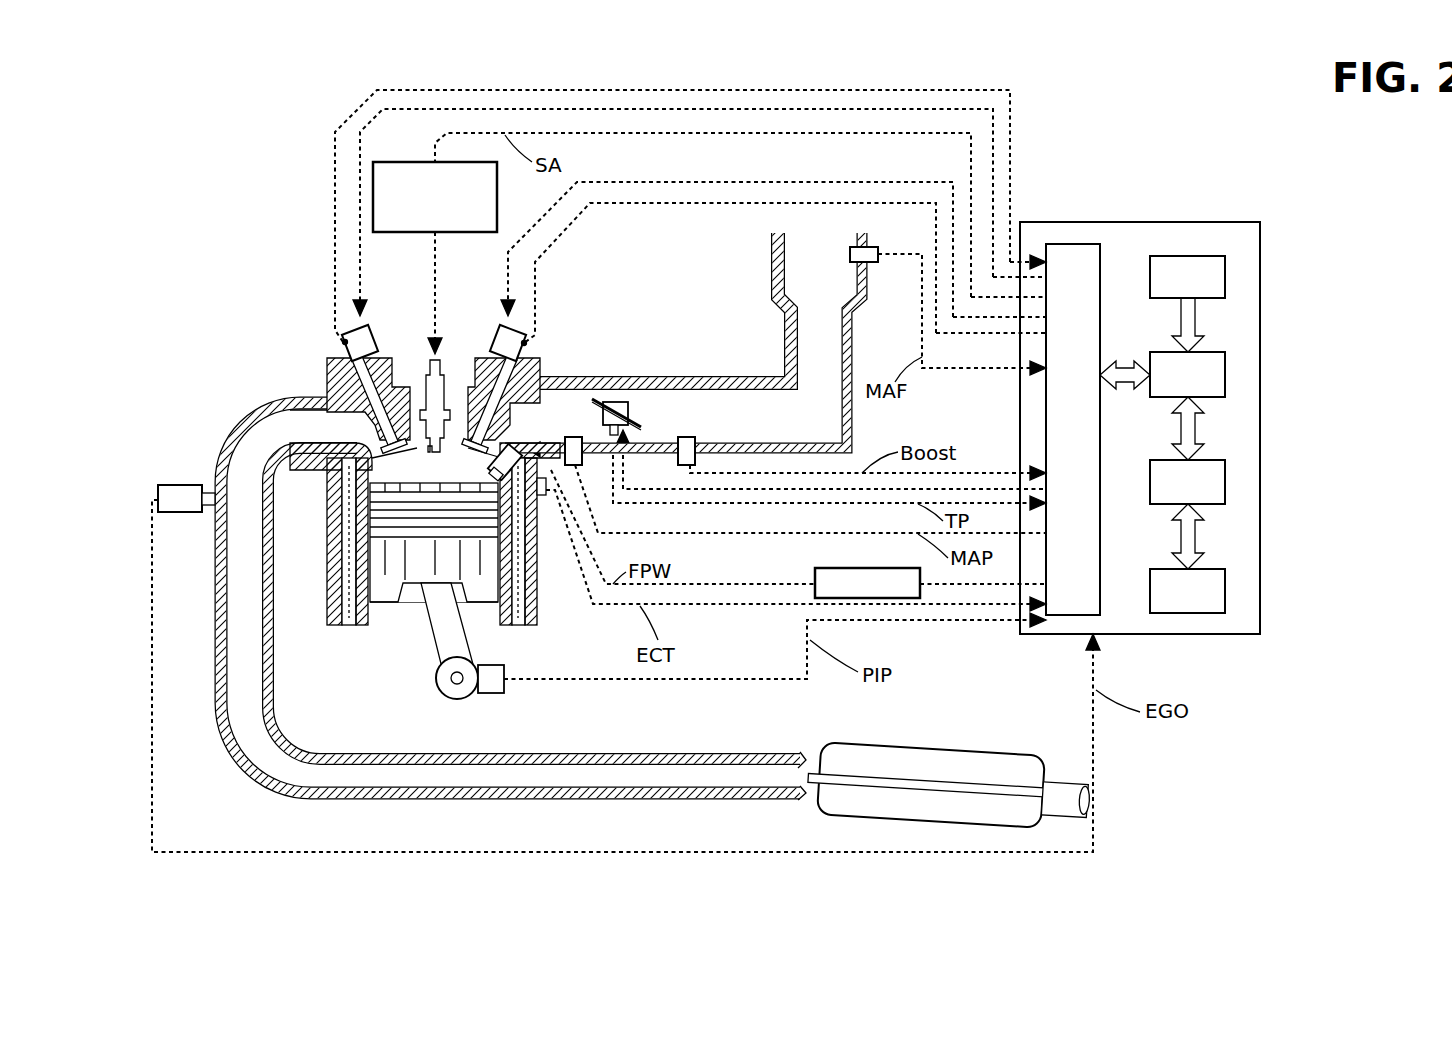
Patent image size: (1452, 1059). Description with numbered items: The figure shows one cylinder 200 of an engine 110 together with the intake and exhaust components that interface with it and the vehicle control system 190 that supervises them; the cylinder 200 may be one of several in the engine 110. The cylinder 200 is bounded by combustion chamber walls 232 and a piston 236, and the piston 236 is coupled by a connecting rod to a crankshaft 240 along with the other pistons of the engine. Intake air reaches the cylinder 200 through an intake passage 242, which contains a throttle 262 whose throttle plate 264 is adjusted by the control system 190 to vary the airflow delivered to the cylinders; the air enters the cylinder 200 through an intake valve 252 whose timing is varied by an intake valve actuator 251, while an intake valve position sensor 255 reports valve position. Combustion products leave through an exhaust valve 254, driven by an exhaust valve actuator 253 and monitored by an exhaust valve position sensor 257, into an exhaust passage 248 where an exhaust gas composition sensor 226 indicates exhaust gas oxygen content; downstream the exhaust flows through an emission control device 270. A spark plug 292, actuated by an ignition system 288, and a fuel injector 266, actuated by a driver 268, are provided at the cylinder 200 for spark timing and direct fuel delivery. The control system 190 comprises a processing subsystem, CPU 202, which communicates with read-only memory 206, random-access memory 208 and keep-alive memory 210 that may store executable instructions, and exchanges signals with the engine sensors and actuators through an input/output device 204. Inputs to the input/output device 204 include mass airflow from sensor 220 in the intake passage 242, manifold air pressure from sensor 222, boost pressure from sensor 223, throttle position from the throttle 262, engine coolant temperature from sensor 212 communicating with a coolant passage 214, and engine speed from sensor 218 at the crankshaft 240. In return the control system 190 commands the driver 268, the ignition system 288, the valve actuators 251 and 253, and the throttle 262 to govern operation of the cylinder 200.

The engine 110 is at (246, 302).
The vehicle control system 190 is at (1250, 222).
The cylinder 200 is at (432, 464).
The processing subsystem (CPU) 202 is at (1226, 372).
The input/output device 204 is at (1100, 250).
The read-only memory (ROM) 206 is at (1226, 272).
The random-access memory (RAM) 208 is at (1226, 486).
The keep-alive memory (KAM) 210 is at (1226, 596).
The engine coolant temperature sensor 212 is at (520, 578).
The coolant passage 214 is at (541, 497).
The engine speed sensor 218 is at (492, 694).
The mass airflow sensor 220 is at (868, 247).
The manifold air pressure sensor 222 is at (578, 465).
The boost pressure sensor 223 is at (678, 450).
The exhaust gas composition sensor 226 is at (158, 495).
The combustion chamber walls 232 is at (368, 605).
The piston 236 is at (415, 572).
The crankshaft 240 is at (445, 696).
The intake passage 242 is at (683, 340).
The exhaust passage 248 is at (513, 601).
The intake valve actuator 251 is at (500, 325).
The intake valve 252 is at (478, 440).
The exhaust valve actuator 253 is at (378, 325).
The exhaust valve 254 is at (388, 445).
The intake valve position sensor 255 is at (526, 344).
The exhaust valve position sensor 257 is at (343, 336).
The throttle 262 is at (618, 400).
The throttle plate 264 is at (606, 402).
The fuel injector 266 is at (505, 455).
The driver 268 is at (818, 570).
The emission control device 270 is at (1002, 748).
The ignition system 288 is at (392, 162).
The spark plug 292 is at (430, 395).